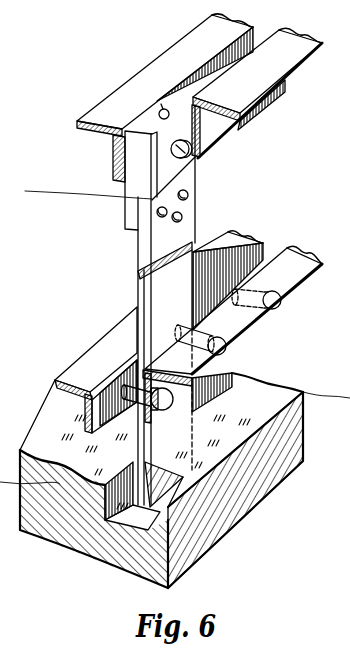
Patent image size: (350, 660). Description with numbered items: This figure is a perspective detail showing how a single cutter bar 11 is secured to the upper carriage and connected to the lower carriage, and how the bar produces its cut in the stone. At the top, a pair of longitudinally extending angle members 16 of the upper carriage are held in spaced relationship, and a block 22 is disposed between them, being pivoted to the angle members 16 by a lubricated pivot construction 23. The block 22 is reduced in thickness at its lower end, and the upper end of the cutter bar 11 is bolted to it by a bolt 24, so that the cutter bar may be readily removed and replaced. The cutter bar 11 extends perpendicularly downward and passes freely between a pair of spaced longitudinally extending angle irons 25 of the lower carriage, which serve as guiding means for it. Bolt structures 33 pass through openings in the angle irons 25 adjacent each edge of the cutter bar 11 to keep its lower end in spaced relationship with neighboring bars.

The cutter bar 11 is at (138, 299).
The angle member 16 is at (158, 75).
The block 22 is at (146, 160).
The lubricated pivot construction 23 is at (189, 146).
The bolt 24 is at (189, 195).
The angle iron 25 is at (232, 247).
The bolt structure 33 is at (115, 378).